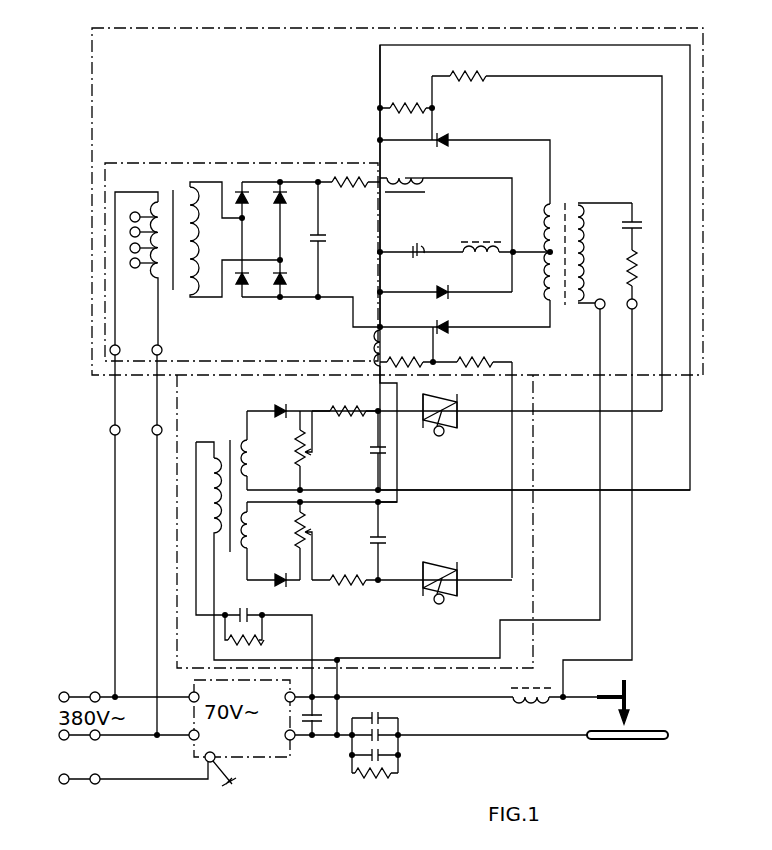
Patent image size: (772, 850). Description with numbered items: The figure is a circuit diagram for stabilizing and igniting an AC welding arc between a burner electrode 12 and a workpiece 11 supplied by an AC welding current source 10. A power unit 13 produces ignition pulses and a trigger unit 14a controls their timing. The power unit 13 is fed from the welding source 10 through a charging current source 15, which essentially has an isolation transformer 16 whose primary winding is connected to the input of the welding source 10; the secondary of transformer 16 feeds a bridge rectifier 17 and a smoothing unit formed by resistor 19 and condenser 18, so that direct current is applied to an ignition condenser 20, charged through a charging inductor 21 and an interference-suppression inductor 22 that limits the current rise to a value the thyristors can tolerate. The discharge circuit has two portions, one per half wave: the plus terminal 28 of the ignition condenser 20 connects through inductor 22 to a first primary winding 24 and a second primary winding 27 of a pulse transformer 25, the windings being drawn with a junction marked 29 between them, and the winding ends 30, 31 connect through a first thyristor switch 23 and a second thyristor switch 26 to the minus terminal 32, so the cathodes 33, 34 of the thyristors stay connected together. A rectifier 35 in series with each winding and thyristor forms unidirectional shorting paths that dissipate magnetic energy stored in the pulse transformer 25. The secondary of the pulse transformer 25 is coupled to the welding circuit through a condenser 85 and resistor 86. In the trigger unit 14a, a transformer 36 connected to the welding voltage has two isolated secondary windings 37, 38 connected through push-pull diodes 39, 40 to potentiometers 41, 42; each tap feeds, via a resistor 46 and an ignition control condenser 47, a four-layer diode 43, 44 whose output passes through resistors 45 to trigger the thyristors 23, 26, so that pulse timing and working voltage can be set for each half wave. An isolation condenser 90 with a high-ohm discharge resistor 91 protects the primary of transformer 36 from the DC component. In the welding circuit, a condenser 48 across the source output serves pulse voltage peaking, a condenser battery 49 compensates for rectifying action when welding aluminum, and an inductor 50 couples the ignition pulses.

The AC welding current source 10 is at (260, 745).
The workpiece 11 is at (620, 742).
The burner electrode 12 is at (630, 699).
The power unit 13 is at (673, 385).
The trigger unit 14a is at (512, 608).
The charging current source 15 is at (152, 165).
The isolation transformer 16 is at (190, 285).
The bridge rectifier 17 is at (229, 251).
The condenser 18 is at (326, 238).
The resistor 19 is at (349, 196).
The ignition condenser 20 is at (418, 243).
The charging inductor 21 is at (418, 170).
The interference-suppression inductor 22 is at (480, 241).
The first thyristor switch 23 is at (452, 138).
The first primary winding 24 is at (532, 228).
The pulse transformer 25 is at (570, 203).
The second thyristor switch 26 is at (452, 326).
The second primary winding 27 is at (548, 293).
The plus terminal 28 is at (444, 278).
The primary winding section 29 is at (548, 260).
The end of primary winding 30 is at (570, 215).
The end of primary winding 31 is at (559, 345).
The minus terminal 32 is at (414, 256).
The cathode 33 is at (393, 150).
The cathode 34 is at (374, 340).
The rectifier 35 is at (436, 296).
The transformer 36 is at (226, 452).
The secondary winding 37 is at (244, 455).
The secondary winding 38 is at (244, 533).
The diode 39 is at (276, 406).
The diode 40 is at (274, 578).
The potentiometer 41 is at (306, 470).
The potentiometer 42 is at (306, 528).
The four-layer diode 43 is at (460, 410).
The four-layer diode 44 is at (452, 580).
The resistor 45 is at (434, 104).
The resistor 46 is at (333, 406).
The ignition control condenser 47 is at (370, 450).
The condenser 48 is at (302, 730).
The condenser battery 49 is at (392, 766).
The inductor 50 is at (531, 708).
The condenser 85 is at (627, 225).
The resistor 86 is at (630, 260).
The isolation condenser 90 is at (267, 660).
The discharge resistor 91 is at (262, 640).